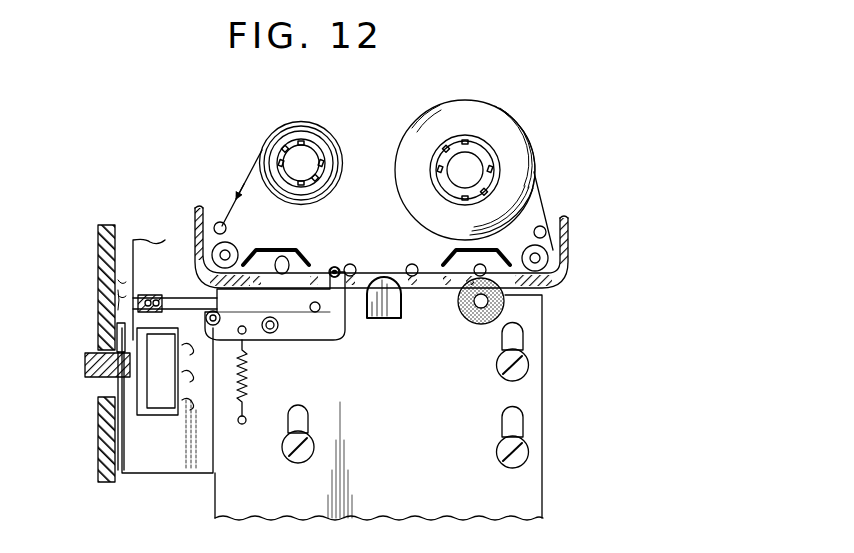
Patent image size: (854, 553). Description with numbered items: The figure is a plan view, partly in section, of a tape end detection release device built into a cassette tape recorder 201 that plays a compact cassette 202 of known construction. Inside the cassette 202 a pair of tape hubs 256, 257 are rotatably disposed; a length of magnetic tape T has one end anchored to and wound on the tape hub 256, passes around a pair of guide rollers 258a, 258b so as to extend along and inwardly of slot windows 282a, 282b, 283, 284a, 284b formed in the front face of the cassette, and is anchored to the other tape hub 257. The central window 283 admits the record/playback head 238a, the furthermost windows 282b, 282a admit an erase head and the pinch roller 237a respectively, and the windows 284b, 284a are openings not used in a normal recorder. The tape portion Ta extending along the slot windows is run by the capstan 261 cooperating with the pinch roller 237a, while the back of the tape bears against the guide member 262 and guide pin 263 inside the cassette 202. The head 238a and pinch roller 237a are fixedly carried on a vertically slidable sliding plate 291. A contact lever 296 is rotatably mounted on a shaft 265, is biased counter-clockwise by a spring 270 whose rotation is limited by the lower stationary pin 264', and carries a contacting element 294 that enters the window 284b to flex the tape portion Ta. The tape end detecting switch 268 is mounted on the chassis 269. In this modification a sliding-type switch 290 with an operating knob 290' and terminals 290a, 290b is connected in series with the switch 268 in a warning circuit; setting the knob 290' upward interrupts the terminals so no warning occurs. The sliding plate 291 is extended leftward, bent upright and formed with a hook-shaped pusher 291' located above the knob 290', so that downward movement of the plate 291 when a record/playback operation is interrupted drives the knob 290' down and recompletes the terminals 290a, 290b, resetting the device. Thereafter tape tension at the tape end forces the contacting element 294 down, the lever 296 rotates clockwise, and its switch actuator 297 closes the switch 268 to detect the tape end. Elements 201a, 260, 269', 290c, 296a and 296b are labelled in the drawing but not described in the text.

The tape recorder 201 is at (140, 200).
The base wall opening 201a is at (118, 320).
The compact cassette 202 is at (382, 128).
The tape hub 256 is at (468, 138).
The tape hub 257 is at (318, 138).
The guide roller 258a is at (568, 268).
The guide roller 258b is at (200, 242).
The cassette housing 260 is at (570, 237).
The capstan 261 is at (478, 264).
The guide member 262 is at (234, 255).
The guide pin 263 is at (346, 270).
The stationary pin 264' is at (304, 346).
The shaft 265 is at (270, 335).
The tape end detecting switch 268 is at (140, 286).
The chassis 269 is at (93, 275).
The plunger guide 269' is at (83, 411).
The spring 270 is at (247, 386).
The slot window 282a is at (522, 260).
The slot window 282b is at (285, 250).
The central window 283 is at (402, 270).
The slot window 284a is at (428, 276).
The slot window 284b is at (342, 262).
The switch 290 is at (168, 423).
The operating knob 290' is at (85, 363).
The switch terminal 290a is at (204, 402).
The switch terminal 290b is at (120, 338).
The solenoid leads 290c is at (192, 442).
The sliding plate 291 is at (400, 407).
The pusher 291' is at (87, 297).
The contacting element 294 is at (296, 266).
The contact lever 296 is at (282, 343).
The lever arm 296a is at (346, 314).
The lever arm 296b is at (215, 300).
The switch actuator 297 is at (222, 302).
The pinch roller 237a is at (468, 312).
The record/playback head 238a is at (396, 322).
The magnetic tape T is at (538, 182).
The tape portion Ta is at (408, 288).